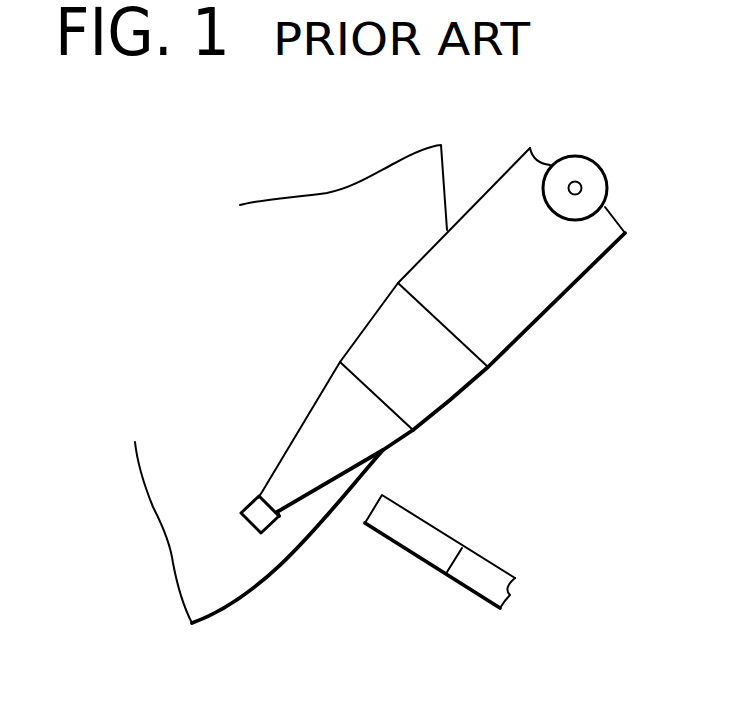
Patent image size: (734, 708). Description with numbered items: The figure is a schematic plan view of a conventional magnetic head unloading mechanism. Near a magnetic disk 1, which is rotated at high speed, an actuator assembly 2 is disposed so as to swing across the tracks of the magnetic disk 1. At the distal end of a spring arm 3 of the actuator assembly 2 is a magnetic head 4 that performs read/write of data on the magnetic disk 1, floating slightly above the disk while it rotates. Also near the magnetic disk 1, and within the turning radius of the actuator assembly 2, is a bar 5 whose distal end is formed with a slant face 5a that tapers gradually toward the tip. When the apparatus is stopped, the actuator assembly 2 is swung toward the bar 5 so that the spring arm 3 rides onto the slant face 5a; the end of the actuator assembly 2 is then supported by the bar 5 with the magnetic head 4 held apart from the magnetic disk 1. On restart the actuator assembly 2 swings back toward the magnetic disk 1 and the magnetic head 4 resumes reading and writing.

The magnetic disk 1 is at (327, 215).
The actuator assembly 2 is at (513, 361).
The spring arm 3 is at (307, 430).
The magnetic head 4 is at (249, 505).
The bar 5 is at (494, 578).
The slant face 5a is at (413, 553).